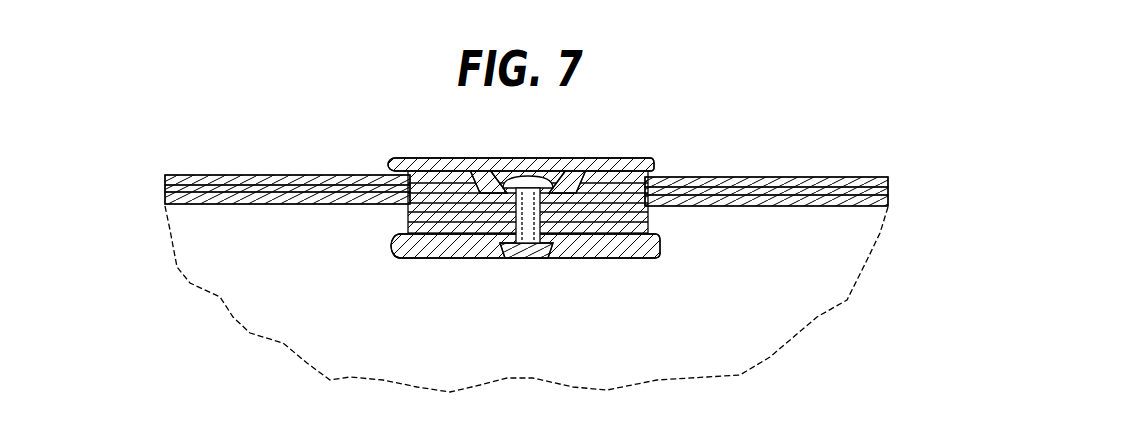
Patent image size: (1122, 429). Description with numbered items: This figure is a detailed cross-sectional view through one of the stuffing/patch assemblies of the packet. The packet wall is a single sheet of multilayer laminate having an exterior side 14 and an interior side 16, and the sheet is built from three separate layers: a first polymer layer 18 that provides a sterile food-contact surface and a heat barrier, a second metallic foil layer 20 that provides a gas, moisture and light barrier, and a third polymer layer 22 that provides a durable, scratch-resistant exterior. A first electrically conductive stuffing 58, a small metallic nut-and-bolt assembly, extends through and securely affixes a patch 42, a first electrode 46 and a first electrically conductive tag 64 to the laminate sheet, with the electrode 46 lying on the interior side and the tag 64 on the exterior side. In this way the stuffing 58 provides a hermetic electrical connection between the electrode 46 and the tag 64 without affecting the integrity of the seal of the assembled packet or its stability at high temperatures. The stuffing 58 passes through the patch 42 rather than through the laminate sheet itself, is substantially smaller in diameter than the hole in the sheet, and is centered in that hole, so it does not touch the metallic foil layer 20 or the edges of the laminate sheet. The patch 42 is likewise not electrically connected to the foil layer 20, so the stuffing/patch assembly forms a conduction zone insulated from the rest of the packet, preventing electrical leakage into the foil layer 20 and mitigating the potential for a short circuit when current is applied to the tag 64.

The exterior side 14 is at (795, 88).
The interior side 16 is at (717, 282).
The first polymer layer 18 is at (760, 205).
The second metallic foil layer 20 is at (800, 182).
The third polymer layer 22 is at (742, 177).
The patch 42 is at (407, 210).
The first electrode 46 is at (408, 253).
The first electrically conductive stuffing 58 is at (524, 243).
The first electrically conductive tag 64 is at (424, 158).